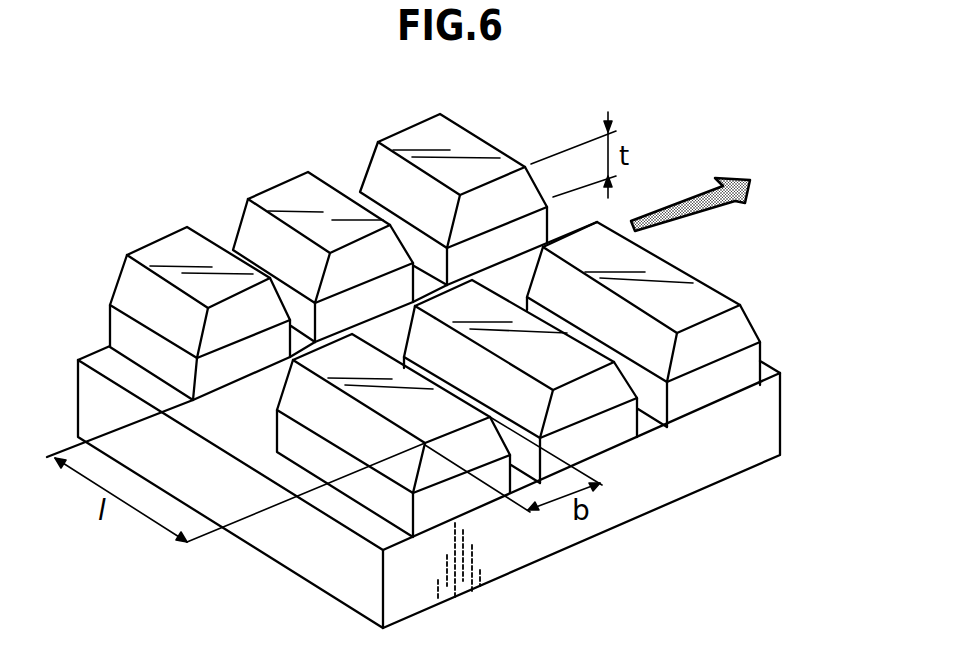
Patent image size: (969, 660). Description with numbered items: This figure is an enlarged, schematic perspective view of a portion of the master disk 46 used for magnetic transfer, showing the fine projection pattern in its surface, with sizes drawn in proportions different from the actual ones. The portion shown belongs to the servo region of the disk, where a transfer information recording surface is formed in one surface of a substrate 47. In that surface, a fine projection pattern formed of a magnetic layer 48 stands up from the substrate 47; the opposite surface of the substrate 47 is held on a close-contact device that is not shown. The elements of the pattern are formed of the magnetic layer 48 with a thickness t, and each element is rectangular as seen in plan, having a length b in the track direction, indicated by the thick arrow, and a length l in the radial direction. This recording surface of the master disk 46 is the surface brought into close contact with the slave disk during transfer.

The master disk 46 is at (472, 371).
The substrate 47 is at (770, 427).
The magnetic layer 48 is at (727, 333).